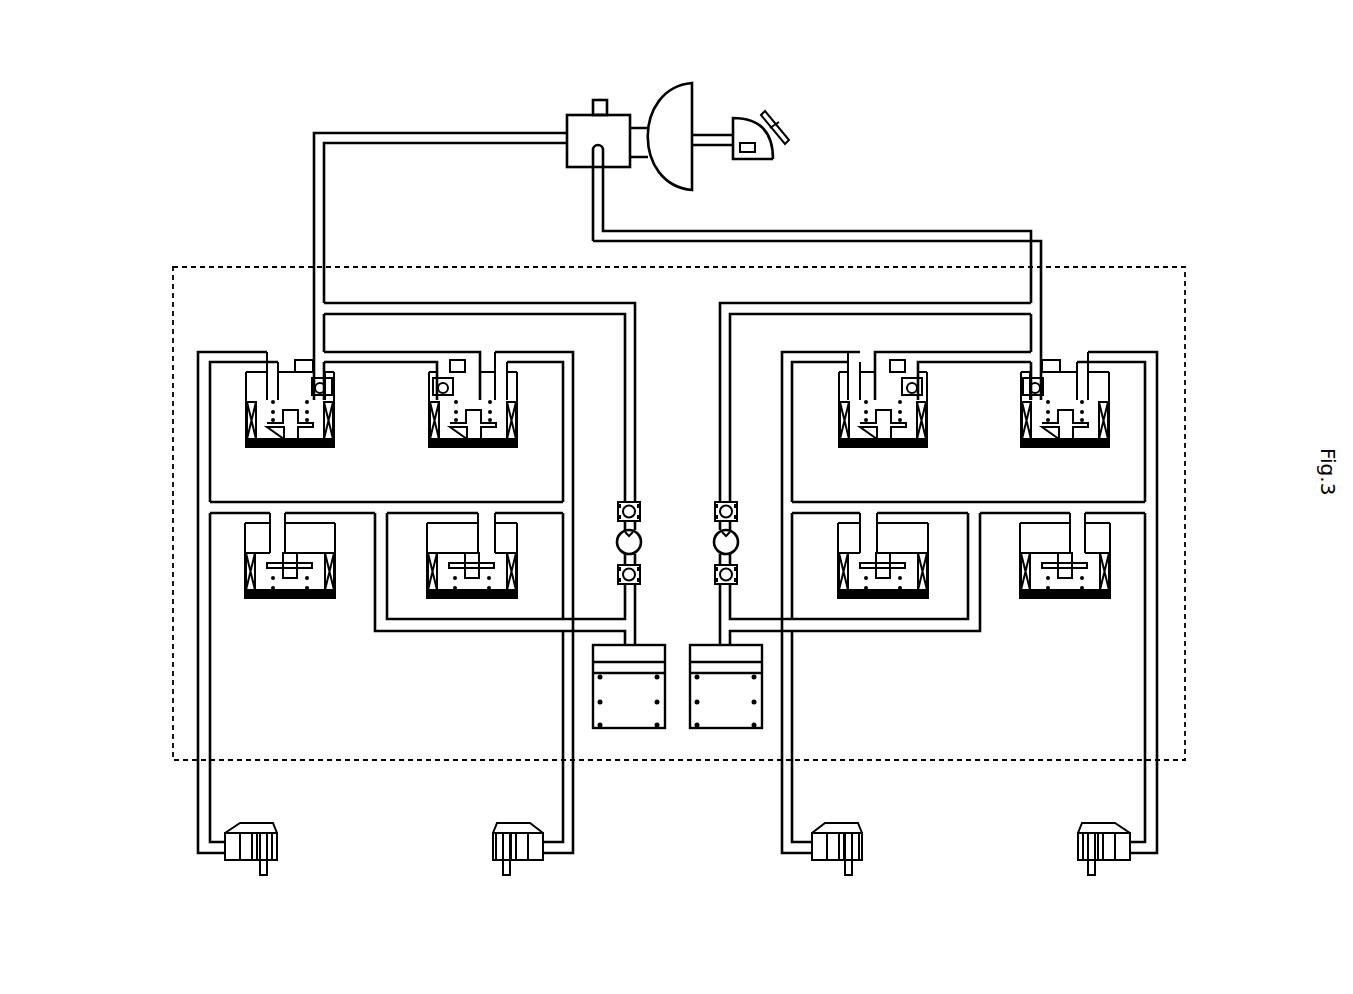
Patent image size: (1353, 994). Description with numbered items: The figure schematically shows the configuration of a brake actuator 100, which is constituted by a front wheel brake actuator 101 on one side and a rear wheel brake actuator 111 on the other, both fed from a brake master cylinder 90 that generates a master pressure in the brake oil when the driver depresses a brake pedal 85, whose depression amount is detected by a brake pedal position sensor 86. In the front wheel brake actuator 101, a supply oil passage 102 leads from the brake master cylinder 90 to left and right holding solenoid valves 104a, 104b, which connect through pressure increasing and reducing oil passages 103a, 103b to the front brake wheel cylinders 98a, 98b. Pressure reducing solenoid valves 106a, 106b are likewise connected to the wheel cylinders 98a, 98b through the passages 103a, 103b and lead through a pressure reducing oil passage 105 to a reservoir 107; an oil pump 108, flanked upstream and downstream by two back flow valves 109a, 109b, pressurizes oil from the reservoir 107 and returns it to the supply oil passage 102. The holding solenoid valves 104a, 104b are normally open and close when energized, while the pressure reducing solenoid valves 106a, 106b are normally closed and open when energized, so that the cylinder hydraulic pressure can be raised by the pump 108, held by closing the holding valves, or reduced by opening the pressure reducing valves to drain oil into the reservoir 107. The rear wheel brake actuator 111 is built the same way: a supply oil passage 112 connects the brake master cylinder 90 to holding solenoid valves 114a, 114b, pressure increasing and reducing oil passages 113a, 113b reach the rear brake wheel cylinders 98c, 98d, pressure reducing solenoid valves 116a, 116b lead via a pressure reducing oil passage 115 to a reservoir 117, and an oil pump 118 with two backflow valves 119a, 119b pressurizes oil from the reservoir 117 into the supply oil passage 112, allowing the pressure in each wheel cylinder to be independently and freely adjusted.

The brake pedal 85 is at (782, 120).
The brake pedal position sensor 86 is at (775, 150).
The brake master cylinder 90 is at (568, 114).
The brake wheel cylinder 98a is at (862, 840).
The brake wheel cylinder 98b is at (1078, 833).
The brake wheel cylinder 98c is at (278, 840).
The brake wheel cylinder 98d is at (492, 833).
The brake actuator 100 is at (1105, 265).
The front wheel brake actuator 101 is at (1104, 313).
The supply oil passage 102 is at (969, 231).
The pressure increasing and reducing oil passage 103a is at (795, 463).
The pressure increasing and reducing oil passage 103b is at (1145, 464).
The holding solenoid valve 104a is at (928, 425).
The holding solenoid valve 104b is at (1020, 393).
The pressure reducing oil passage 105 is at (920, 632).
The pressure reducing solenoid valve 106a is at (877, 515).
The pressure reducing solenoid valve 106b is at (1060, 602).
The reservoir 107 is at (720, 728).
The oil pump 108 is at (757, 524).
The back flow valve 109a is at (750, 498).
The back flow valve 109b is at (737, 572).
The rear wheel brake actuator 111 is at (251, 313).
The supply oil passage 112 is at (326, 215).
The pressure increasing and reducing oil passage 113a is at (211, 463).
The pressure increasing and reducing oil passage 113b is at (563, 464).
The holding solenoid valve 114a is at (336, 418).
The holding solenoid valve 114b is at (432, 393).
The pressure reducing oil passage 115 is at (470, 632).
The pressure reducing solenoid valve 116a is at (290, 600).
The pressure reducing solenoid valve 116b is at (480, 515).
The reservoir 117 is at (630, 728).
The oil pump 118 is at (641, 542).
The backflow valve 119a is at (650, 498).
The backflow valve 119b is at (640, 572).